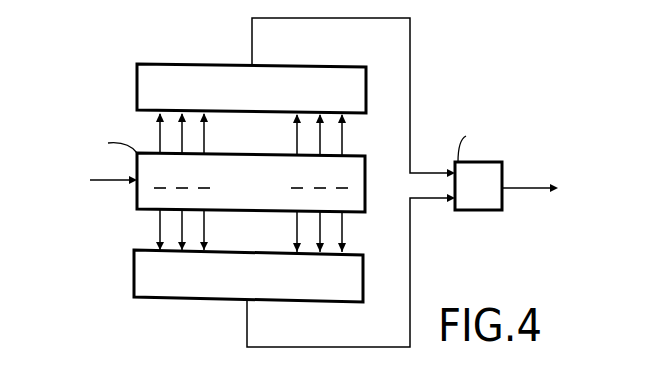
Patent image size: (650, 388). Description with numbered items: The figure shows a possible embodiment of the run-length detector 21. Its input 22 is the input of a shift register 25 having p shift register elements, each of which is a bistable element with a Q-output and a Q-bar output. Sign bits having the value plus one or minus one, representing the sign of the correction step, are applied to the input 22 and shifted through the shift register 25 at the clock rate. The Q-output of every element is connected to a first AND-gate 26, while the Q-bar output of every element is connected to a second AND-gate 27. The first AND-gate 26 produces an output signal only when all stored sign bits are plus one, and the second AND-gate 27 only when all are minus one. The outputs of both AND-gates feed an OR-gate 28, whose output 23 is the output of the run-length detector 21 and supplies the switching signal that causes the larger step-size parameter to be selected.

The run-length detector 21 is at (208, 32).
The input 22 is at (100, 183).
The output 23 is at (525, 187).
The shift register 25 is at (366, 192).
The first AND-gate 26 is at (319, 66).
The second AND-gate 27 is at (338, 301).
The OR-gate 28 is at (478, 211).